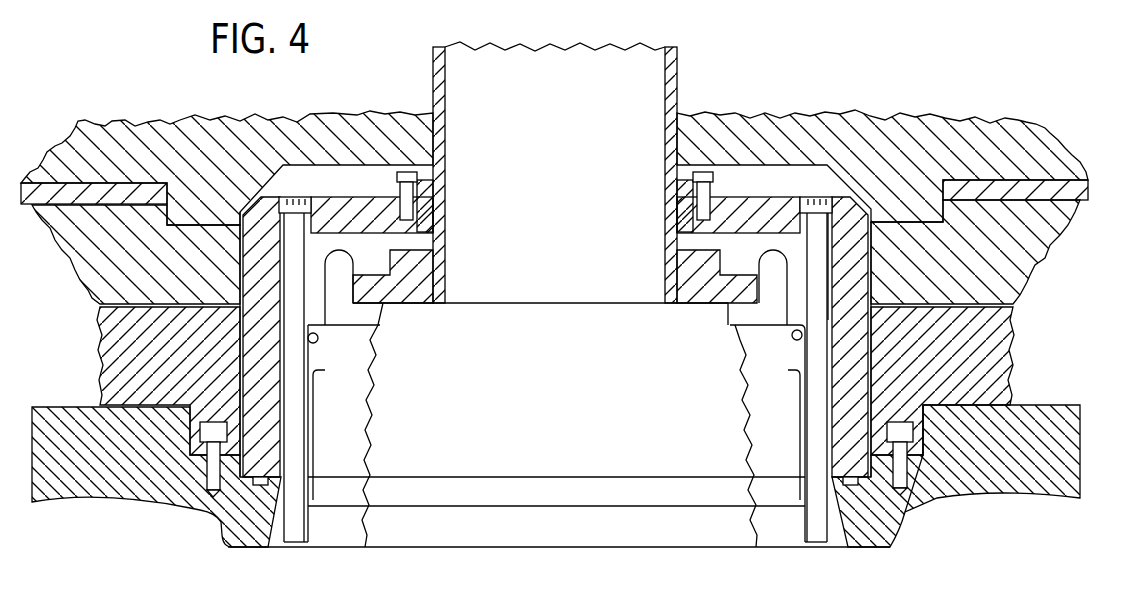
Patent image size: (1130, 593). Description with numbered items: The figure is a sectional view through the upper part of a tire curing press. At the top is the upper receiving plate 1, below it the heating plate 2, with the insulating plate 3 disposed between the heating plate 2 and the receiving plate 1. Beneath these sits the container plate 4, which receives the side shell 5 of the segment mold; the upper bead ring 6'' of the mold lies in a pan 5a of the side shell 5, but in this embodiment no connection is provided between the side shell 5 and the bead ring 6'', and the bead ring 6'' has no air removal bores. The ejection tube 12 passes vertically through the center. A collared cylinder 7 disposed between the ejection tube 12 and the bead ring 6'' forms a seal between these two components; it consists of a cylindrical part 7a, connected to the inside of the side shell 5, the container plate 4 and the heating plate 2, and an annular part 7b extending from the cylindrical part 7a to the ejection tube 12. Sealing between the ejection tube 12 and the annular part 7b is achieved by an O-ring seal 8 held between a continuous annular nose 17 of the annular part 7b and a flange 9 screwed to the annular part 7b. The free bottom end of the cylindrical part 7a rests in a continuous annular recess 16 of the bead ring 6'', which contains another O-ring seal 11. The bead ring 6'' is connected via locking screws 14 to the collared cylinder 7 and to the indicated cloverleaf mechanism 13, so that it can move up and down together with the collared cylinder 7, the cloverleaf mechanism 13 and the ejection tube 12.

The upper receiving plate 1 is at (1022, 153).
The heating plate 2 is at (1037, 238).
The insulating plate 3 is at (1078, 192).
The container plate 4 is at (992, 351).
The side shell 5 is at (573, 480).
The pan 5a is at (936, 447).
The bead ring 6'' is at (956, 499).
The collared cylinder 7 is at (587, 284).
The cylindrical part 7a is at (838, 298).
The annular part 7b is at (770, 218).
The O-ring seal 8 is at (680, 208).
The flange 9 is at (701, 174).
The O-ring seal 11 is at (858, 484).
The ejection tube 12 is at (671, 89).
The cloverleaf mechanism 13 is at (778, 523).
The locking screws 14 is at (830, 268).
The annular recess 16 is at (852, 497).
The annular nose 17 is at (716, 183).